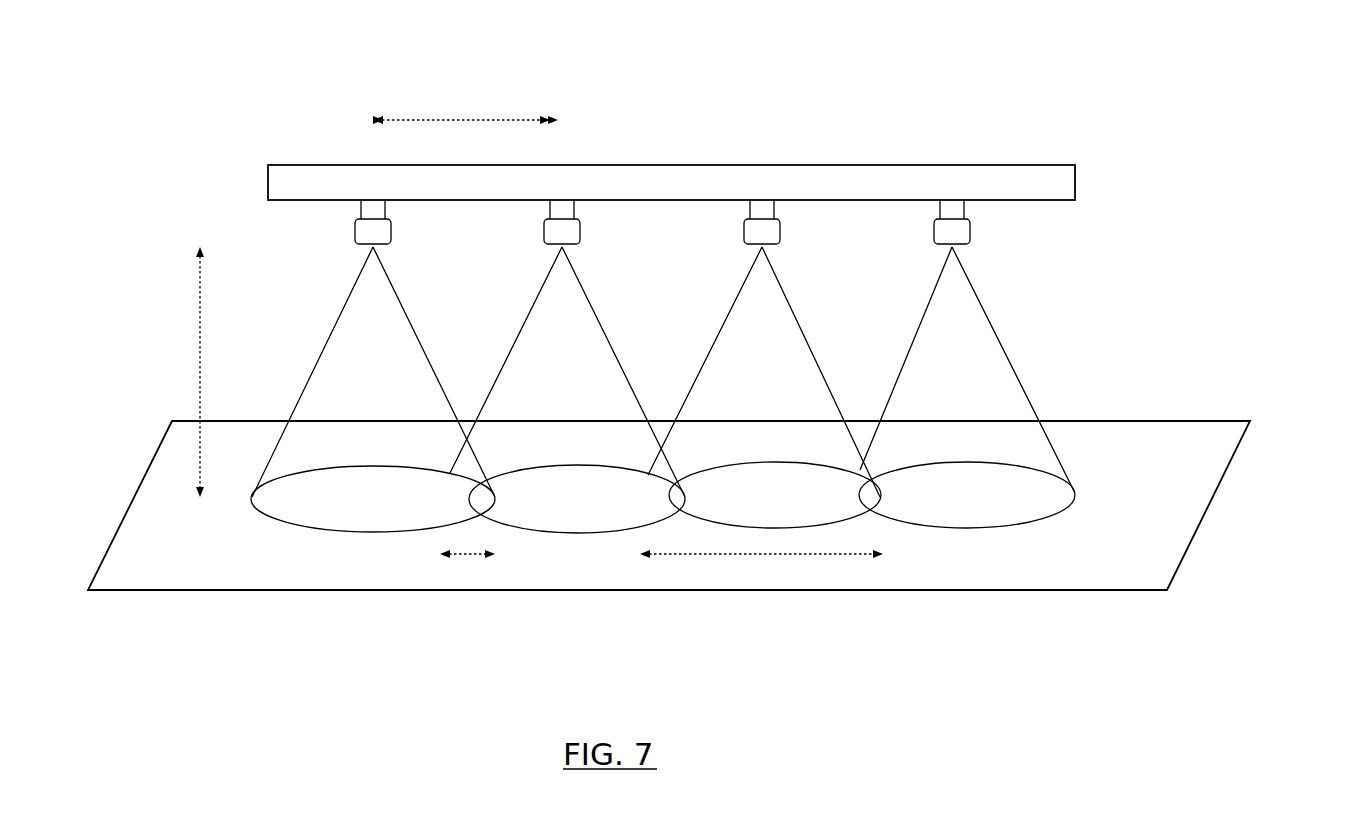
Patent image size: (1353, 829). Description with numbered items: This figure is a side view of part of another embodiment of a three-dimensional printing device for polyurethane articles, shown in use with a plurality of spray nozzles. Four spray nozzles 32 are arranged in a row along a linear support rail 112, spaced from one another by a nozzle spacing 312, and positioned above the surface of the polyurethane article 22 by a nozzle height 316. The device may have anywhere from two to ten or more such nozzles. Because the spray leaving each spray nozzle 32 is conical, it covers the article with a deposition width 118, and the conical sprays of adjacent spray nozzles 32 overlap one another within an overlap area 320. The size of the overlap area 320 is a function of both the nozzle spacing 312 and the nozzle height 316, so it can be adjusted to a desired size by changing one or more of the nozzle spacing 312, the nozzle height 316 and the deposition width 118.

The linear support rail 112 is at (1030, 177).
The spray nozzle 32 is at (378, 211).
The polyurethane article 22 is at (1203, 453).
The nozzle spacing 312 is at (464, 120).
The nozzle height 316 is at (200, 347).
The overlap area 320 is at (462, 558).
The deposition width 118 is at (758, 558).